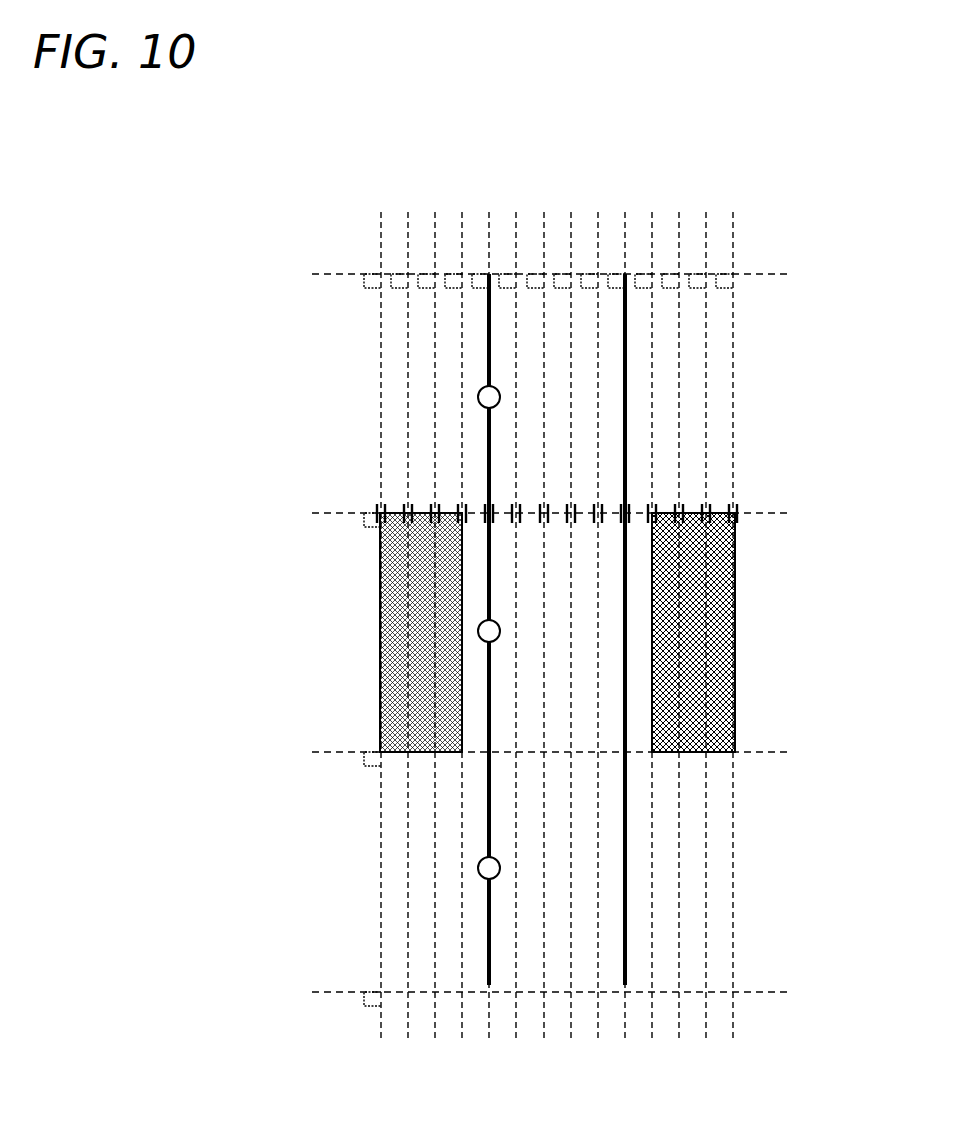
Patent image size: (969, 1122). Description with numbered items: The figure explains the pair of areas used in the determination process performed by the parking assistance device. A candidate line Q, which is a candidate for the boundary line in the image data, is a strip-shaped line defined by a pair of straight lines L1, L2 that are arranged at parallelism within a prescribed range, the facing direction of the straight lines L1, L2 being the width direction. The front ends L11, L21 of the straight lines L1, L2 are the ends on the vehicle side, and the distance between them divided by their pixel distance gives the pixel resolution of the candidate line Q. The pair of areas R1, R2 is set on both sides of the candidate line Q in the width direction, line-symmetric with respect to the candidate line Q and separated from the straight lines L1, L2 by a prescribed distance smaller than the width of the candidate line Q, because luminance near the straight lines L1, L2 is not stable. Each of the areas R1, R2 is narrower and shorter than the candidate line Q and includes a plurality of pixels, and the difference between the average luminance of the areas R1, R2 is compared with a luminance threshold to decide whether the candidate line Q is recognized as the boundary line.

The straight line L1 is at (626, 357).
The straight line L2 is at (489, 356).
The front end of straight line L11 is at (625, 274).
The front end of straight line L21 is at (489, 285).
The candidate line Q is at (489, 322).
The area R1 is at (735, 700).
The area R2 is at (380, 697).